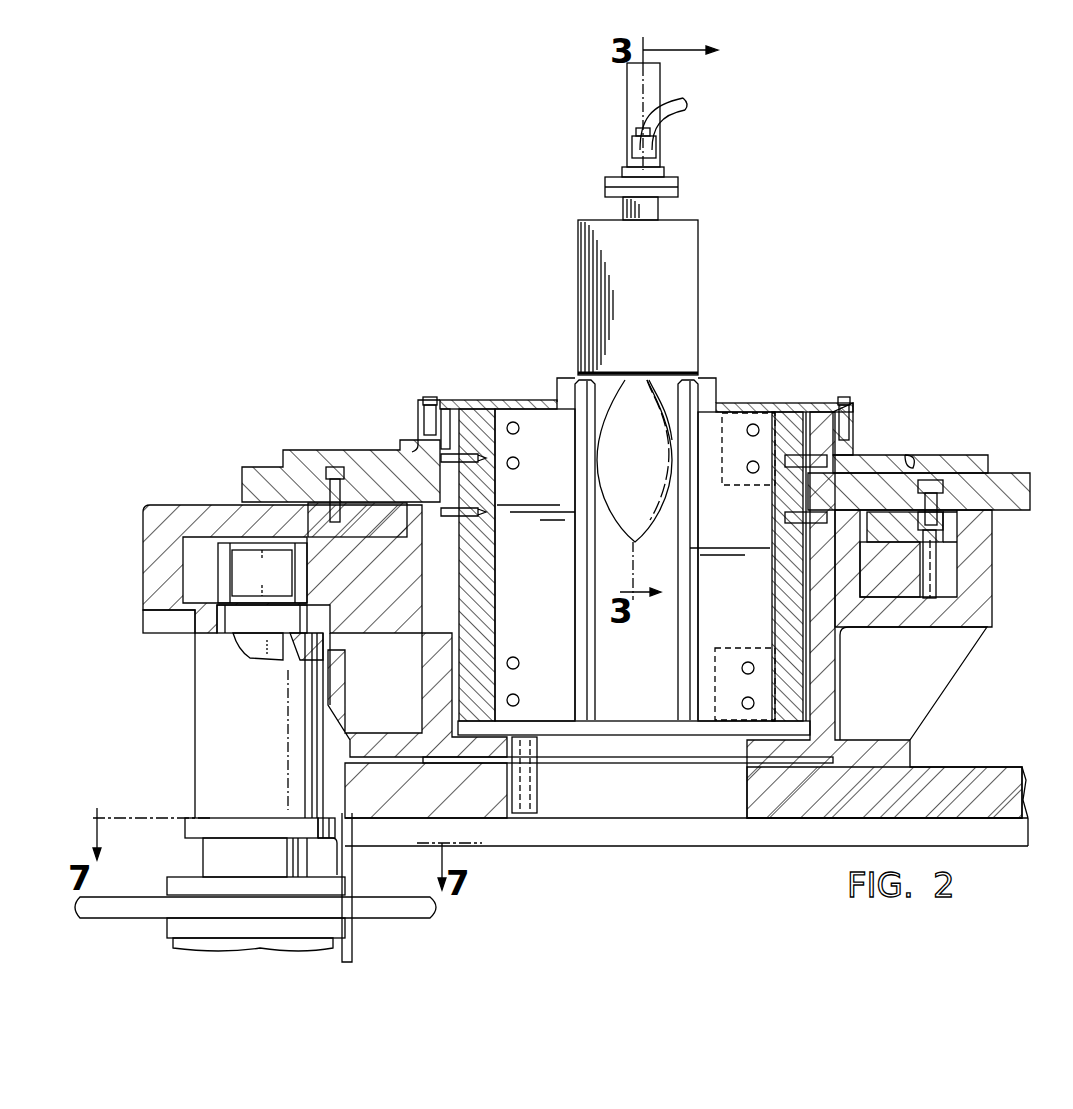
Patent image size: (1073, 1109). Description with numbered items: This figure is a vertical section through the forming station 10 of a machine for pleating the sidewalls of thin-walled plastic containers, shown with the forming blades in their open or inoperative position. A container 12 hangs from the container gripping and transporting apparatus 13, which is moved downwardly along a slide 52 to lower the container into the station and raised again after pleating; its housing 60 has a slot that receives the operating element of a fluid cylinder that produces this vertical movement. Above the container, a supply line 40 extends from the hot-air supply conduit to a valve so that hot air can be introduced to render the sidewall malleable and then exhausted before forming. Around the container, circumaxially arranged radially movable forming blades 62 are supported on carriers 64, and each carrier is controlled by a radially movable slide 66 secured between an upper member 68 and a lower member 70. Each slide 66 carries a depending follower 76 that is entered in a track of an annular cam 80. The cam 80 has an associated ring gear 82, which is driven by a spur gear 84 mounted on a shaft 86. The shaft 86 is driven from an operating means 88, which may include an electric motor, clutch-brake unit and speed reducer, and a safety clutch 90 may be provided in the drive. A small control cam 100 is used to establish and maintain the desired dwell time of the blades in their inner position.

The forming station 10 is at (633, 671).
The container 12 is at (643, 482).
The container gripping and transporting apparatus 13 is at (718, 233).
The supply line 40 is at (667, 100).
The slide 52 is at (633, 90).
The housing 60 is at (667, 307).
The forming blades 62 is at (562, 442).
The carriers 64 is at (472, 547).
The slide 66 is at (275, 475).
The upper member 68 is at (958, 462).
The lower member 70 is at (983, 522).
The follower 76 is at (330, 510).
The annular cam 80 is at (947, 535).
The ring gear 82 is at (917, 560).
The spur gear 84 is at (202, 558).
The shaft 86 is at (274, 591).
The operating means 88 is at (138, 905).
The safety clutch 90 is at (333, 875).
The control cam 100 is at (218, 825).